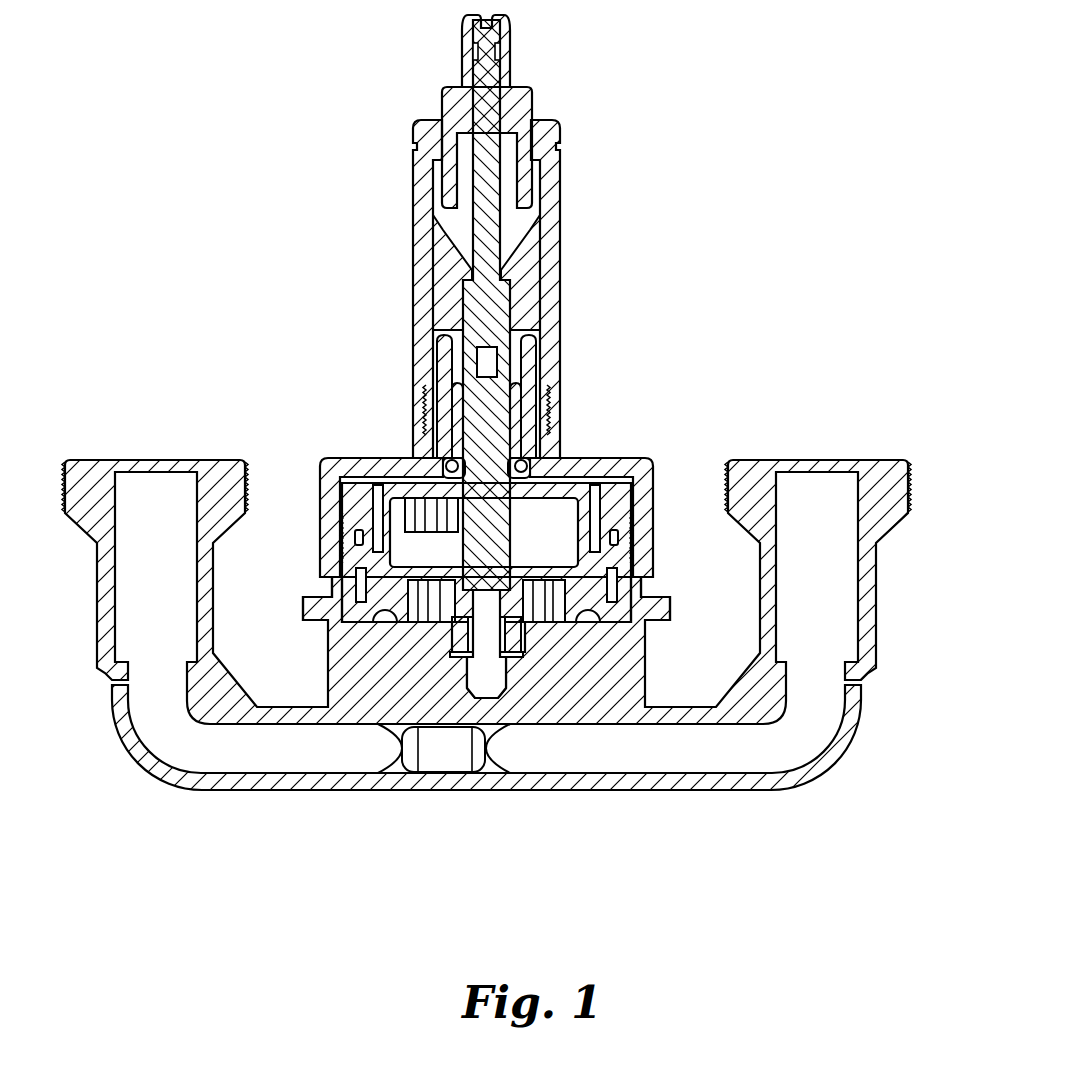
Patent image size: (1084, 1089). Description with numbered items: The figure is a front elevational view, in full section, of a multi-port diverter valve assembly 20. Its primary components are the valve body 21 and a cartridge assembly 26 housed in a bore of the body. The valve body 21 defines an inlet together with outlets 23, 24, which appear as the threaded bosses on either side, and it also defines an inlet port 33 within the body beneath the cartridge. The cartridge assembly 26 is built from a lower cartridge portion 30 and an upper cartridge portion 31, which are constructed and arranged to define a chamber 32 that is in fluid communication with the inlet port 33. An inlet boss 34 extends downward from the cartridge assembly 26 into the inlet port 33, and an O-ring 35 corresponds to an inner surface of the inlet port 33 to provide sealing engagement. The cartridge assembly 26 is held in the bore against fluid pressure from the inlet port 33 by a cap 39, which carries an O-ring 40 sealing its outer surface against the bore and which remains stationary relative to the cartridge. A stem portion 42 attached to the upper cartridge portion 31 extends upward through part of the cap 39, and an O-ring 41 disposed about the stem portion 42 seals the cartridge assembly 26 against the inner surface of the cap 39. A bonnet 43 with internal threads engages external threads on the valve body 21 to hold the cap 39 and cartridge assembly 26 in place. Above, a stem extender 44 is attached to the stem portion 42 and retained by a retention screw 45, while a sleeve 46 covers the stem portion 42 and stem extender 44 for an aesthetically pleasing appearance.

The diverter valve assembly 20 is at (789, 220).
The valve body 21 is at (830, 745).
The outlet 23 is at (846, 444).
The outlet 24 is at (211, 450).
The cartridge assembly 26 is at (334, 558).
The lower cartridge portion 30 is at (642, 587).
The upper cartridge portion 31 is at (618, 458).
The chamber 32 is at (532, 548).
The inlet port 33 is at (480, 675).
The inlet boss 34 is at (517, 657).
The O-ring 35 is at (436, 658).
The cap 39 is at (648, 512).
The O-ring 40 is at (355, 533).
The O-ring 41 is at (540, 446).
The stem portion 42 is at (460, 425).
The bonnet 43 is at (652, 462).
The stem extender 44 is at (526, 278).
The retention screw 45 is at (512, 248).
The sleeve 46 is at (548, 352).